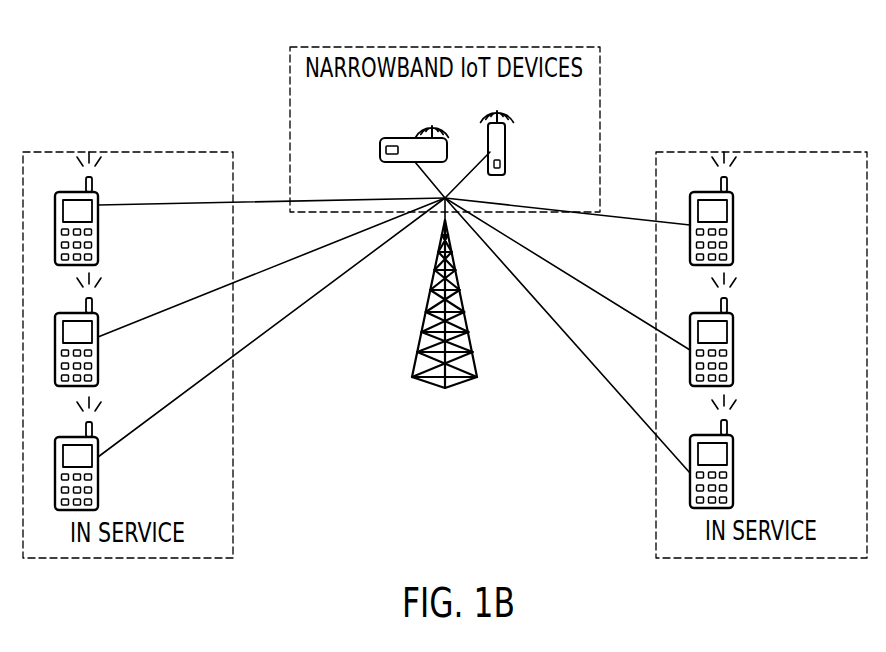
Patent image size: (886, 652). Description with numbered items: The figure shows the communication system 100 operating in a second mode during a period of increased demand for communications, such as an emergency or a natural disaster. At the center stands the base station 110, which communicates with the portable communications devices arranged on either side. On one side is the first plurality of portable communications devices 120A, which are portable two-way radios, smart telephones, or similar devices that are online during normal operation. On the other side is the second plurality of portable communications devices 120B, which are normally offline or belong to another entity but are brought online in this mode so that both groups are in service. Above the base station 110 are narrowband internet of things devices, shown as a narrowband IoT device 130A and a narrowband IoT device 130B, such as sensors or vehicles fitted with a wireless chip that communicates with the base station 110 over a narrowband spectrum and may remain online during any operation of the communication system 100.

The communication system 100 is at (806, 44).
The base station 110 is at (422, 305).
The first plurality of portable communications devices 120A is at (733, 227).
The second plurality of portable communications devices 120B is at (98, 227).
The narrowband IoT device 130A is at (505, 148).
The narrowband IoT device 130B is at (380, 150).